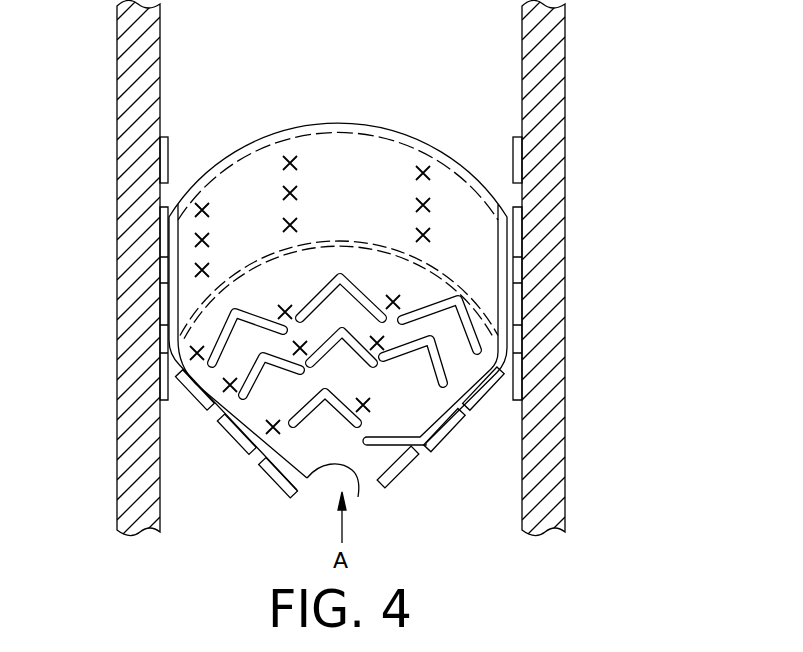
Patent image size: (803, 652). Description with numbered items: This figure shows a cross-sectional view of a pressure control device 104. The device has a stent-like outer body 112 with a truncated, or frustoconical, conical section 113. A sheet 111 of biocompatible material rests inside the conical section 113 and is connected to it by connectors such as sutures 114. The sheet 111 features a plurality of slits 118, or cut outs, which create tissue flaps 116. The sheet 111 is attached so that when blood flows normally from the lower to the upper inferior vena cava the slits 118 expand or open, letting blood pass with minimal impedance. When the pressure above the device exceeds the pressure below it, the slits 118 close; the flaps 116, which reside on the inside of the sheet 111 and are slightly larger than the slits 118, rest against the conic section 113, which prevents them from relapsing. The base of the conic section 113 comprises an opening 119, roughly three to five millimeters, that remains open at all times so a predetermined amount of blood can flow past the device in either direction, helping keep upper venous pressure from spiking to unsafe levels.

The pressure control device 104 is at (468, 163).
The sheet of biocompatible material 111 is at (419, 398).
The stent-like outer body 112 is at (168, 226).
The truncated conical section 113 is at (483, 400).
The sutures 114 is at (285, 226).
The tissue flaps 116 is at (445, 340).
The slits 118 is at (358, 289).
The opening 119 is at (358, 492).